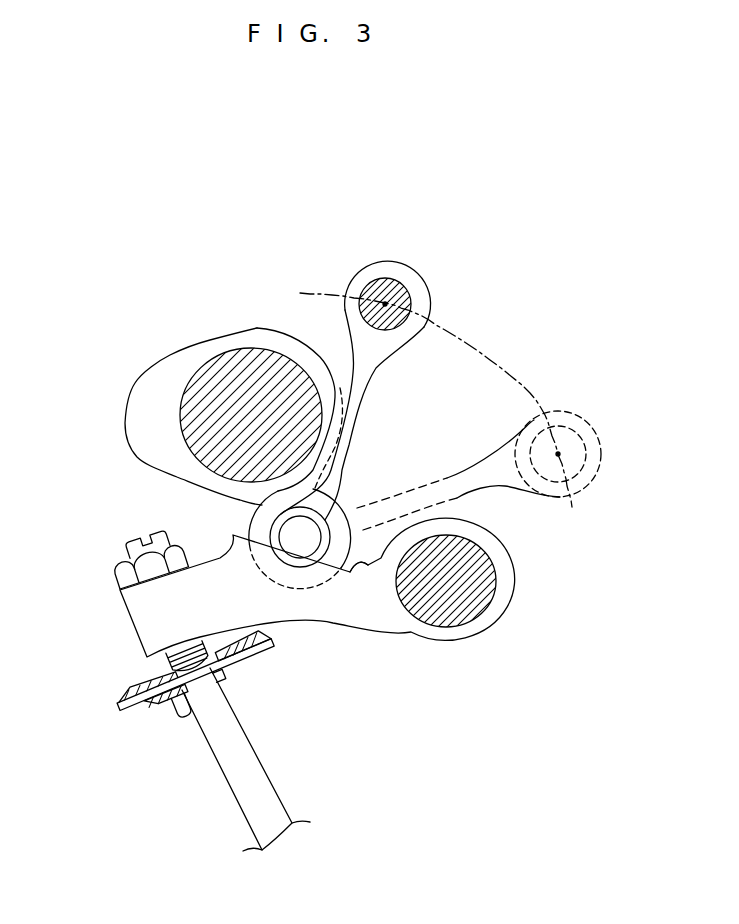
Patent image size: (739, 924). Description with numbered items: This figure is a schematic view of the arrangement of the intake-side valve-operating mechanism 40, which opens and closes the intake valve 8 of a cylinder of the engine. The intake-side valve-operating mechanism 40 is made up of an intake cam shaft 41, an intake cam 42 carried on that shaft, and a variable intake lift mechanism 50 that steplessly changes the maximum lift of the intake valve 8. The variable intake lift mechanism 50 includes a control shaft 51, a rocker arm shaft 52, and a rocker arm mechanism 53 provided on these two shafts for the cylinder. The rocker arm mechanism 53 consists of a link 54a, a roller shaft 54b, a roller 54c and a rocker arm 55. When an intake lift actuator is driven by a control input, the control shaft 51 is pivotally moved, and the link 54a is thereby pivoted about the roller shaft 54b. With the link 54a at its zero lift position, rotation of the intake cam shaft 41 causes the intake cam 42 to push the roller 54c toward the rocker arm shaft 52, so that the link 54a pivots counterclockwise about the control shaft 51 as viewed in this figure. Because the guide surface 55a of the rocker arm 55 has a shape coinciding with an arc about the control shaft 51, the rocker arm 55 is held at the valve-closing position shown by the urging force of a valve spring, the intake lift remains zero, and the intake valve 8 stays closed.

The intake valve 8 is at (228, 788).
The intake-side valve-operating mechanism 40 is at (66, 172).
The intake cam shaft 41 is at (248, 358).
The intake cam 42 is at (171, 355).
The variable intake lift mechanism 50 is at (565, 315).
The control shaft 51 is at (370, 293).
The rocker arm shaft 52 is at (447, 610).
The rocker arm mechanism 53 is at (565, 560).
The link 54a is at (382, 260).
The roller shaft 54b is at (307, 537).
The roller 54c is at (257, 517).
The rocker arm 55 is at (492, 625).
The guide surface 55a is at (362, 574).